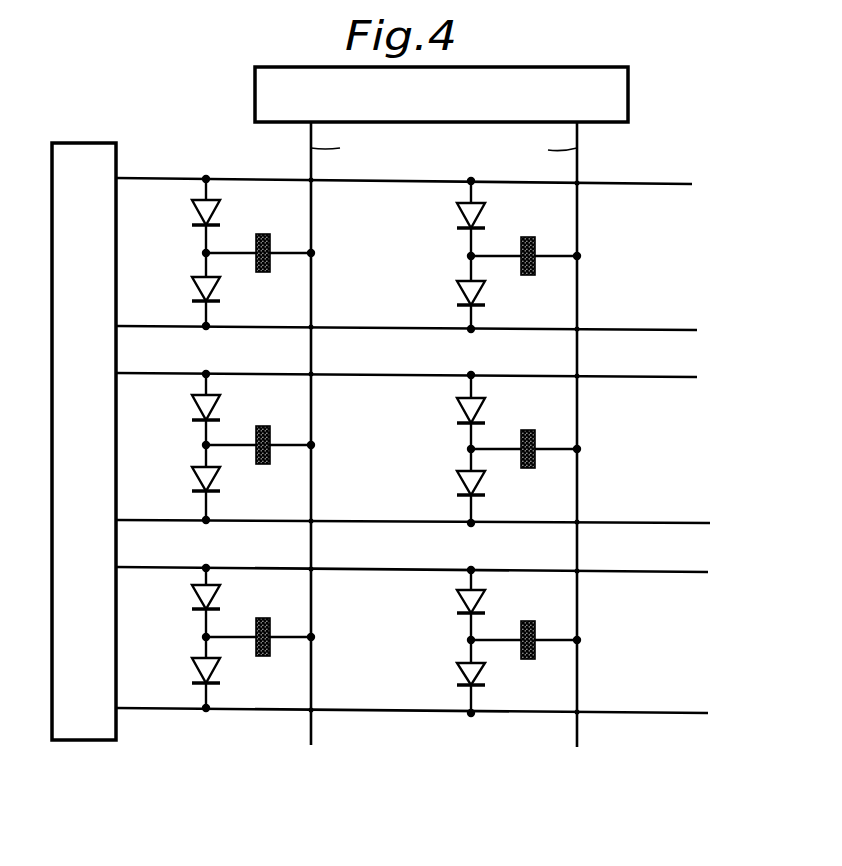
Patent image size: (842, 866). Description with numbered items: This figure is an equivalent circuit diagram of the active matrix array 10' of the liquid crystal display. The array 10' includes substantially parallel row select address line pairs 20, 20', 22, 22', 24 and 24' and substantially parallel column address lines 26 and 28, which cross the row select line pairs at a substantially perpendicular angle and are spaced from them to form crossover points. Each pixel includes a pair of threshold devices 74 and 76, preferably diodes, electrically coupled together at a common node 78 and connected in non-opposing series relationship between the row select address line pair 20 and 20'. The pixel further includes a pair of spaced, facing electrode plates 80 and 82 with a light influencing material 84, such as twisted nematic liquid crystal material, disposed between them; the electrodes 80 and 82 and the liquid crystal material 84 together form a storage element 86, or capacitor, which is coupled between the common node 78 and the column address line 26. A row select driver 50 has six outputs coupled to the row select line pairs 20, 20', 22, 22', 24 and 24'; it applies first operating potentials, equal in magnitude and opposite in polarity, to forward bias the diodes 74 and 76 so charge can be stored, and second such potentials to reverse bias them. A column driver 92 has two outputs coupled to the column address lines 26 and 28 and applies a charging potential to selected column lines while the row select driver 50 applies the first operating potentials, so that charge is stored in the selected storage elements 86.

The matrix array 10' is at (444, 429).
The row select address line 20 is at (416, 199).
The row select address line 20' is at (421, 315).
The row select address line 22 is at (415, 393).
The row select address line 22' is at (419, 507).
The row select address line 24 is at (418, 587).
The row select address line 24' is at (423, 696).
The column address line 26 is at (311, 228).
The column address line 28 is at (577, 240).
The row select driver 50 is at (98, 134).
The column driver 92 is at (640, 98).
The storage element 86 is at (526, 255).
The threshold device 74 is at (457, 218).
The threshold device 76 is at (458, 292).
The common node 78 is at (469, 257).
The electrode plate 80 is at (520, 263).
The electrode plate 82 is at (535, 263).
The light influencing material 84 is at (527, 238).